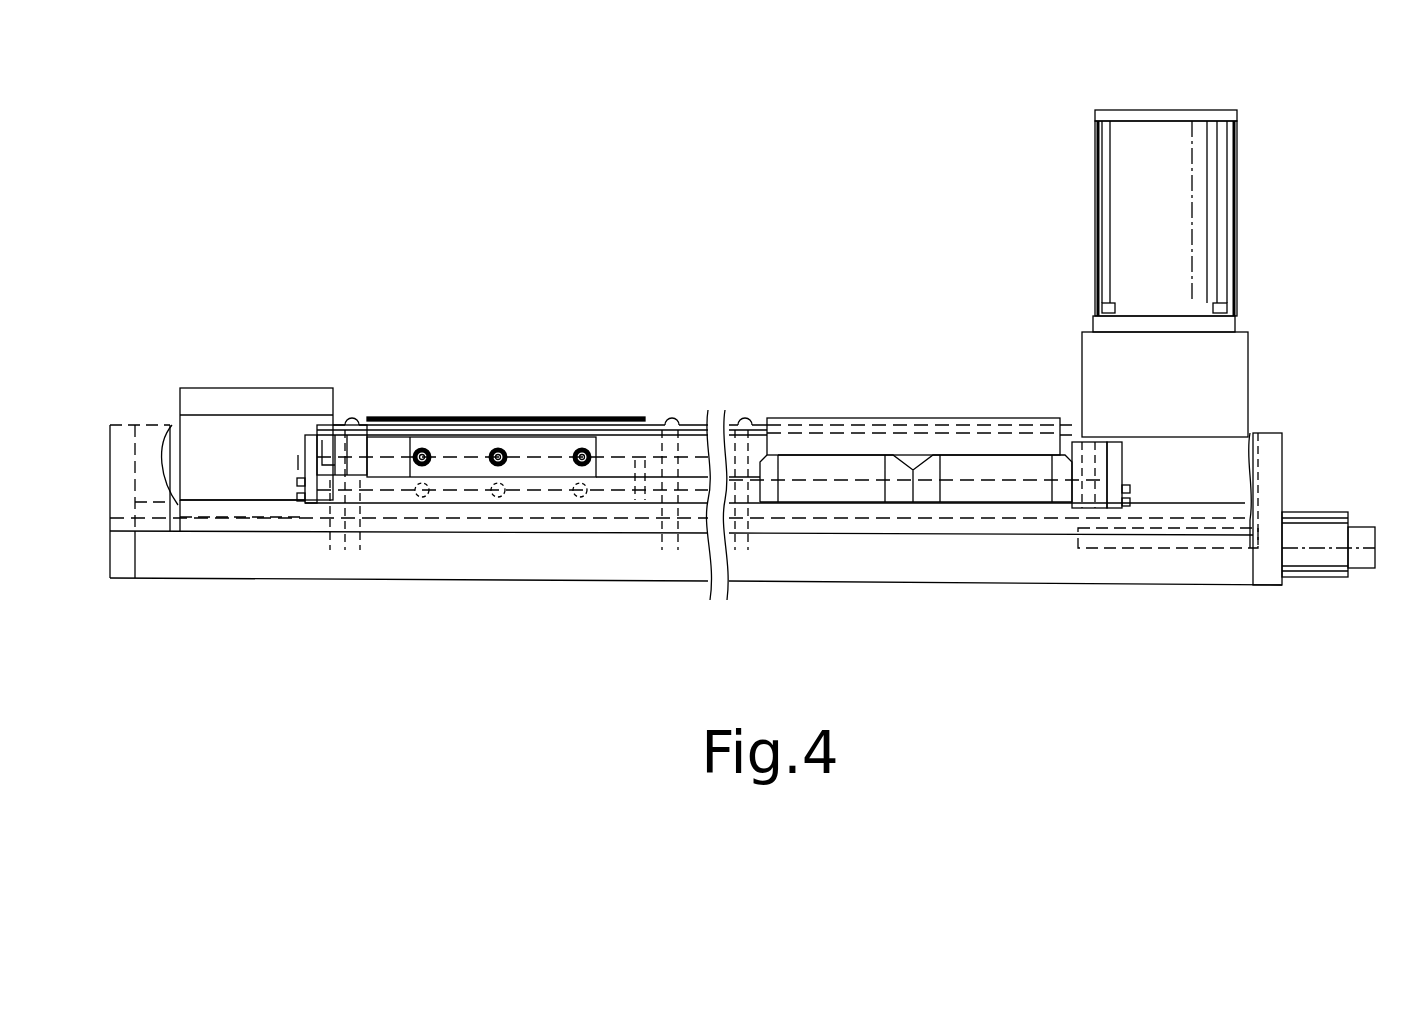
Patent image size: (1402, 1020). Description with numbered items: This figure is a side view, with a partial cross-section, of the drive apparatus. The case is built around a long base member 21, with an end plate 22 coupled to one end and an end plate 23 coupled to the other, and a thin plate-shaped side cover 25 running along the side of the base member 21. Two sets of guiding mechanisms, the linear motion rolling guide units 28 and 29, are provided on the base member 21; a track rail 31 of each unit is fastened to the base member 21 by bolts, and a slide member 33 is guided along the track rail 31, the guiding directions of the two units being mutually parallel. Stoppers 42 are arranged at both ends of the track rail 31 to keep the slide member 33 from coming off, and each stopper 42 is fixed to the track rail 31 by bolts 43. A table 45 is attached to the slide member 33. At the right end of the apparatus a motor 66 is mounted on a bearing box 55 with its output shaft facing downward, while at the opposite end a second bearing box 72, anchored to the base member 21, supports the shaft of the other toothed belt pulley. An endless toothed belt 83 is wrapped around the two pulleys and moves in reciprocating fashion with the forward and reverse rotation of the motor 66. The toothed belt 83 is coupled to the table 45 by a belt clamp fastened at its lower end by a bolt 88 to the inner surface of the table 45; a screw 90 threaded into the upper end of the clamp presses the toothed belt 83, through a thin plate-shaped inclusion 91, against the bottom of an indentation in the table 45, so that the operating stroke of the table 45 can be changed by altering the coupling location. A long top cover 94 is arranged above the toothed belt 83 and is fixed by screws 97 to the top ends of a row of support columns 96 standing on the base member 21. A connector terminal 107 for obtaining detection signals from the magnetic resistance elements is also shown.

The base member 21 is at (995, 568).
The end plate 22 is at (135, 568).
The end plate 23 is at (1270, 578).
The side cover 25 is at (153, 423).
The linear motion rolling guide unit 28 is at (300, 462).
The linear motion rolling guide unit 29 is at (1126, 463).
The track rail 31 is at (697, 493).
The slide member 33 is at (393, 440).
The stopper 42 is at (312, 435).
The bolt 43 is at (298, 486).
The table 45 is at (570, 415).
The bearing box 55 is at (1253, 374).
The motor 66 is at (1220, 243).
The bearing box 72 is at (222, 388).
The endless toothed belt 83 is at (407, 416).
The bolt 88 is at (422, 497).
The screw 90 is at (426, 450).
The inclusion 91 is at (433, 437).
The top cover 94 is at (540, 415).
The support column 96 is at (345, 550).
The screw 97 is at (352, 418).
The connector terminal 107 is at (1340, 500).